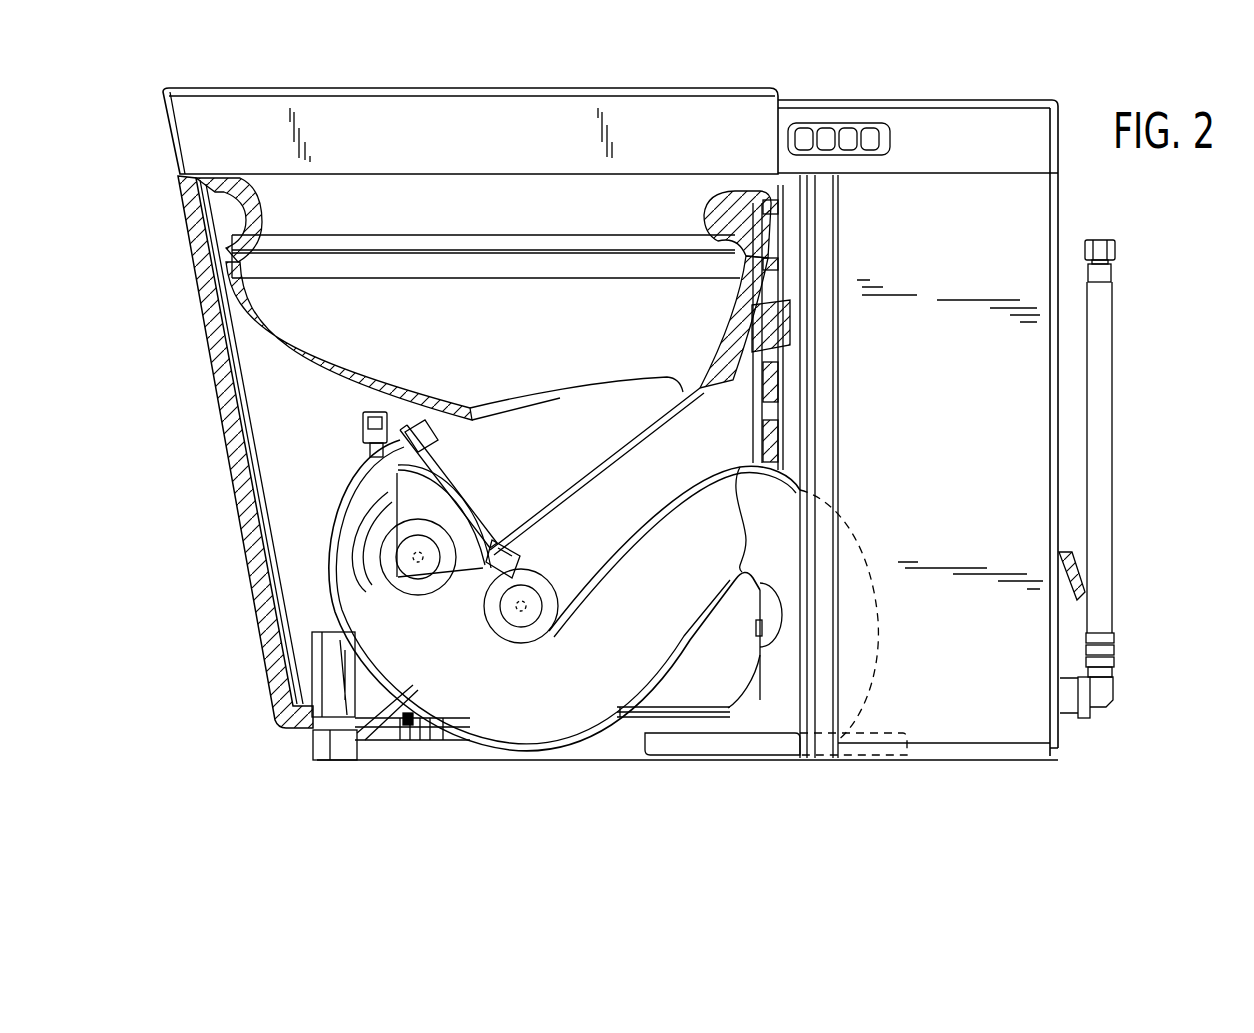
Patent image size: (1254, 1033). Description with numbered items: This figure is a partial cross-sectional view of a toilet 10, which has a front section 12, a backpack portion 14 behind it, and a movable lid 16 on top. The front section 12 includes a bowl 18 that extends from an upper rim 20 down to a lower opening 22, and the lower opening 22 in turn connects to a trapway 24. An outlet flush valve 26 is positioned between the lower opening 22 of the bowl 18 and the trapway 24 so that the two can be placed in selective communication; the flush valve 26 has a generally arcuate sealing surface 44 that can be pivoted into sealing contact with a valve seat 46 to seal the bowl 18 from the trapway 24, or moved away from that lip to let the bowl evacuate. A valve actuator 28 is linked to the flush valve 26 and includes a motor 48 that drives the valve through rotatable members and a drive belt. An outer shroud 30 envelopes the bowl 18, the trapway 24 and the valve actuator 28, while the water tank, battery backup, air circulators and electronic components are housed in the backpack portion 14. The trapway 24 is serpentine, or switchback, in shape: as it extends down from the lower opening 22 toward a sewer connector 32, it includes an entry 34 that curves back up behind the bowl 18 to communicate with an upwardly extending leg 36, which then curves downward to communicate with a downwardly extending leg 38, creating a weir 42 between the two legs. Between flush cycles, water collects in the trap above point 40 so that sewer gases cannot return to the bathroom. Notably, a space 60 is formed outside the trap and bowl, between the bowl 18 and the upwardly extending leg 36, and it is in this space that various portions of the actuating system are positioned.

The toilet 10 is at (196, 618).
The front section 12 is at (266, 449).
The backpack portion 14 is at (1021, 230).
The movable lid 16 is at (534, 115).
The bowl 18 is at (503, 339).
The upper rim 20 is at (710, 214).
The lower opening 22 is at (499, 491).
The trapway 24 is at (589, 738).
The outlet flush valve 26 is at (406, 487).
The valve actuator 28 is at (558, 575).
The outer shroud 30 is at (203, 322).
The sewer connector 32 is at (759, 761).
The entry 34 is at (412, 686).
The upwardly extending leg 36 is at (643, 615).
The downwardly extending leg 38 is at (880, 653).
The point 40 is at (514, 650).
The weir 42 is at (742, 568).
The arcuate sealing surface 44 is at (457, 472).
The valve seat 46 is at (395, 452).
The motor 48 is at (523, 583).
The space 60 is at (580, 578).